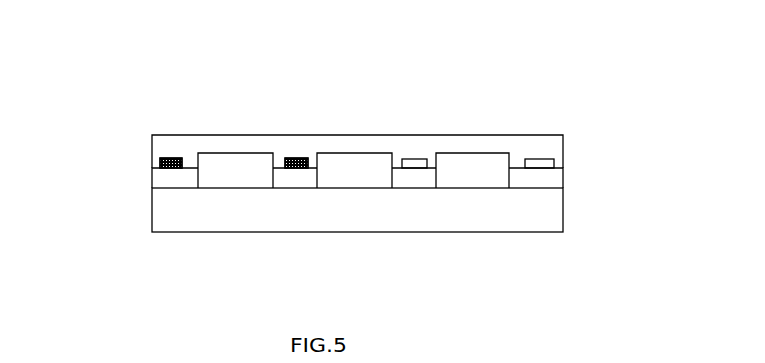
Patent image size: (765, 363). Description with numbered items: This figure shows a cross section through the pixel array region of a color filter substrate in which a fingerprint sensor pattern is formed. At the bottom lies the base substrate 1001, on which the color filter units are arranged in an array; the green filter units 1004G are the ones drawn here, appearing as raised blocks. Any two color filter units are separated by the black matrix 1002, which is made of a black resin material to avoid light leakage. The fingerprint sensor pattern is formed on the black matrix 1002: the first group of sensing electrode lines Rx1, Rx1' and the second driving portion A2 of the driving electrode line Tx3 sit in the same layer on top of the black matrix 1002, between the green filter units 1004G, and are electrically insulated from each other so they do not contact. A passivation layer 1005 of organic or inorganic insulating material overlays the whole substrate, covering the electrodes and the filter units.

The base substrate 1001 is at (170, 217).
The black matrix 1002 is at (170, 185).
The passivation layer 1005 is at (158, 148).
The green filter units 1004G is at (258, 167).
The second driving portion A2 is at (168, 155).
The driving electrode line Tx3 is at (274, 119).
The sensing electrode line Rx1 is at (444, 135).
The sensing electrode line Rx1' is at (573, 134).